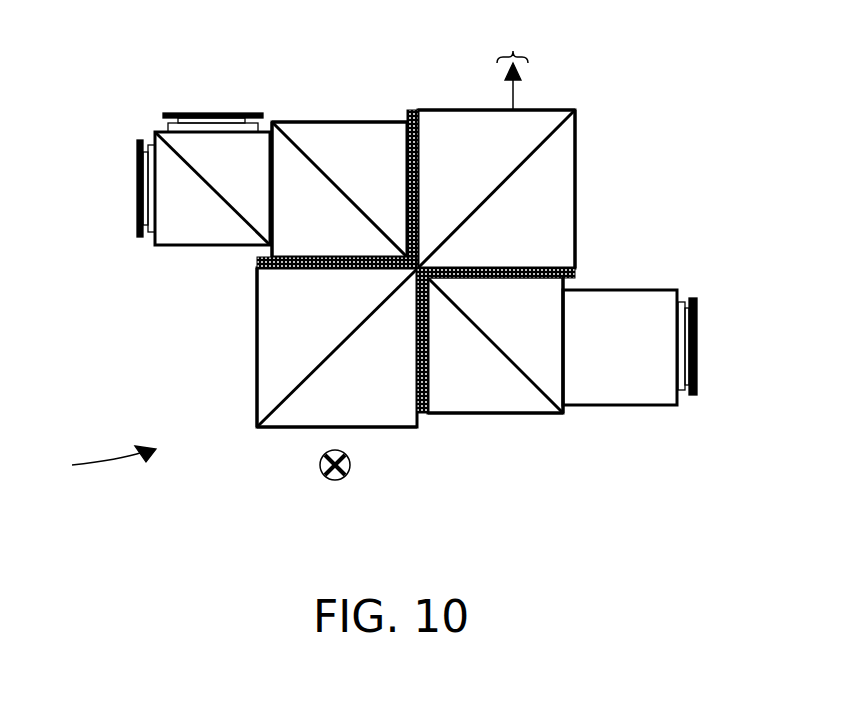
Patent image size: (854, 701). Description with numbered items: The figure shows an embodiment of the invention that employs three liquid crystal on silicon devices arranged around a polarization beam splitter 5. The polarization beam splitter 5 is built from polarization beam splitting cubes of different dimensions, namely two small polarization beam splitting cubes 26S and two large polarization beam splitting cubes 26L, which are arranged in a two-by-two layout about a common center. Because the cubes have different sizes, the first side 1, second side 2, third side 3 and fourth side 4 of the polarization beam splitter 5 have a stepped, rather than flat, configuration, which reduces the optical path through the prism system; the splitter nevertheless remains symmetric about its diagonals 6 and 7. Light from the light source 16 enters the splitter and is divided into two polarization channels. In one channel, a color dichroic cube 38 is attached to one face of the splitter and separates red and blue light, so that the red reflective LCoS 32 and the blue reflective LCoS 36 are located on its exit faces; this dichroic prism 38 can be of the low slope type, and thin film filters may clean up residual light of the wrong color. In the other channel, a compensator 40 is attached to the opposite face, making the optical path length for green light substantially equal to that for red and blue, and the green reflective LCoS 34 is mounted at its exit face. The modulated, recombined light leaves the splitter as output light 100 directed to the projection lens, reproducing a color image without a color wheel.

The first side of polarization beam splitter 1 is at (280, 427).
The second side of polarization beam splitter 2 is at (370, 122).
The third side of polarization beam splitter 3 is at (250, 123).
The fourth side of polarization beam splitter 4 is at (575, 203).
The polarization beam splitter 5 is at (100, 461).
The diagonal of polarization beam splitter 6 is at (548, 142).
The diagonal of polarization beam splitter 7 is at (291, 141).
The light source 16 is at (338, 482).
The small polarization beam splitting cube 26S is at (340, 223).
The large polarization beam splitting cube 26L is at (548, 222).
The red reflective LCoS 32 is at (196, 112).
The green reflective LCoS 34 is at (697, 345).
The blue reflective LCoS 36 is at (137, 190).
The color dichroic cube (dichroic prism) 38 is at (197, 222).
The compensator 40 is at (622, 378).
The output light to projection lens 100 is at (515, 62).